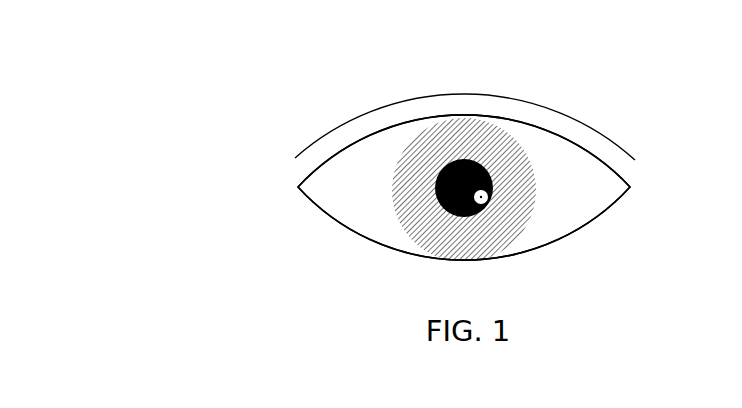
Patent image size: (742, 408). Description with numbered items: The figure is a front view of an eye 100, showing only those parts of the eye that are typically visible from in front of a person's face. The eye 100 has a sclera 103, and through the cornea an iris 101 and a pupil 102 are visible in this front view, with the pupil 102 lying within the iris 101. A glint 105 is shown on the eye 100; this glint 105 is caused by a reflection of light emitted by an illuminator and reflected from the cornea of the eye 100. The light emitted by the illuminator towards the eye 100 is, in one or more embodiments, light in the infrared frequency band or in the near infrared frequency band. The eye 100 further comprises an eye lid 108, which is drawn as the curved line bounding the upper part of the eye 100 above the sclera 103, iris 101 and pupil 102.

The eye 100 is at (205, 138).
The iris 101 is at (517, 178).
The pupil 102 is at (457, 158).
The sclera 103 is at (358, 162).
The glint 105 is at (488, 197).
The eye lid 108 is at (650, 153).